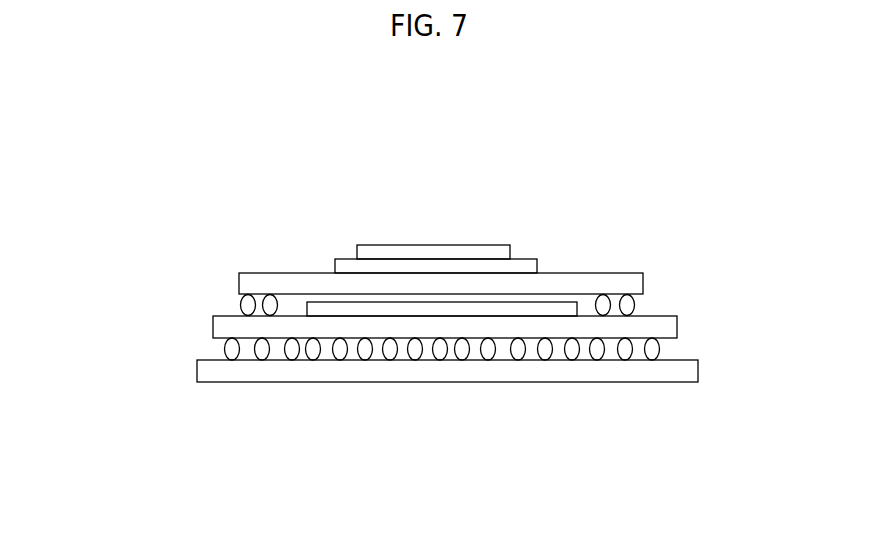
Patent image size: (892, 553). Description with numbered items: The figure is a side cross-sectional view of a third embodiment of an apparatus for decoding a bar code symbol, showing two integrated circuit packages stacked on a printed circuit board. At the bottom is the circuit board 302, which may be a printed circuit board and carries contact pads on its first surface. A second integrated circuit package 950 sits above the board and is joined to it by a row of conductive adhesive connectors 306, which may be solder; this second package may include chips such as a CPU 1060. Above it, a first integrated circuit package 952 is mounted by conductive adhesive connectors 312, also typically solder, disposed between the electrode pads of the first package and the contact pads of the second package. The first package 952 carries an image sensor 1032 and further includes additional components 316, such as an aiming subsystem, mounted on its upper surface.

The circuit board 302 is at (670, 383).
The conductive adhesive connector 306 is at (233, 348).
The conductive adhesive connector 312 is at (243, 305).
The additional components 316 is at (467, 250).
The second integrated circuit package 950 is at (677, 323).
The first integrated circuit package 952 is at (637, 273).
The image sensor 1032 is at (335, 263).
The CPU 1060 is at (417, 308).